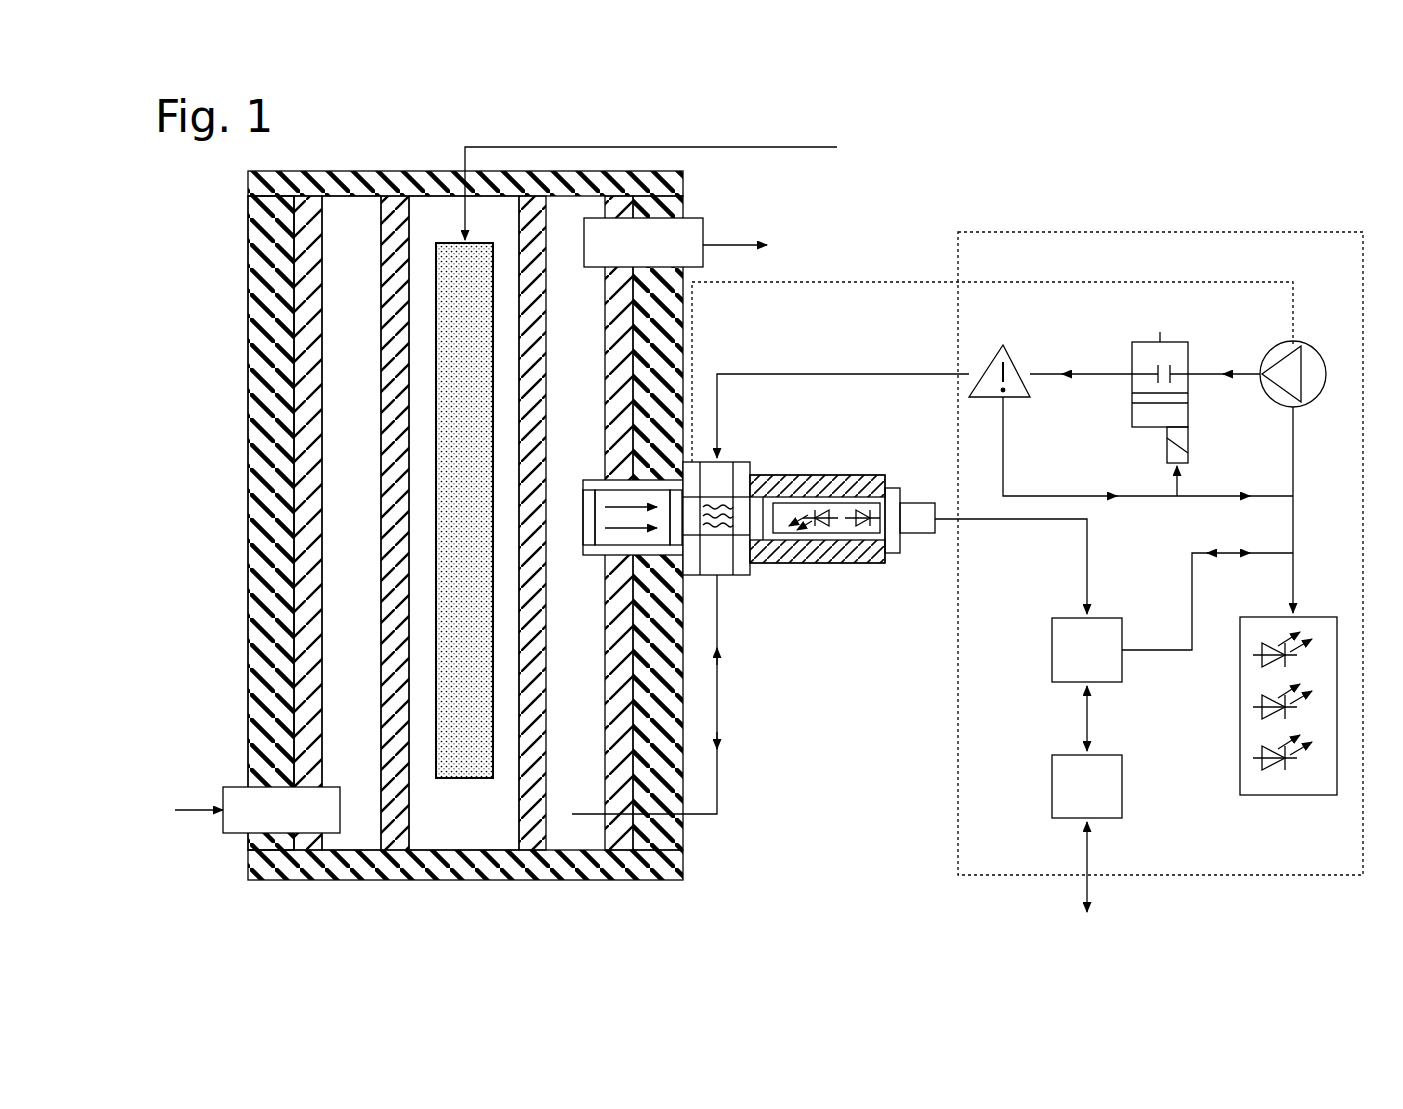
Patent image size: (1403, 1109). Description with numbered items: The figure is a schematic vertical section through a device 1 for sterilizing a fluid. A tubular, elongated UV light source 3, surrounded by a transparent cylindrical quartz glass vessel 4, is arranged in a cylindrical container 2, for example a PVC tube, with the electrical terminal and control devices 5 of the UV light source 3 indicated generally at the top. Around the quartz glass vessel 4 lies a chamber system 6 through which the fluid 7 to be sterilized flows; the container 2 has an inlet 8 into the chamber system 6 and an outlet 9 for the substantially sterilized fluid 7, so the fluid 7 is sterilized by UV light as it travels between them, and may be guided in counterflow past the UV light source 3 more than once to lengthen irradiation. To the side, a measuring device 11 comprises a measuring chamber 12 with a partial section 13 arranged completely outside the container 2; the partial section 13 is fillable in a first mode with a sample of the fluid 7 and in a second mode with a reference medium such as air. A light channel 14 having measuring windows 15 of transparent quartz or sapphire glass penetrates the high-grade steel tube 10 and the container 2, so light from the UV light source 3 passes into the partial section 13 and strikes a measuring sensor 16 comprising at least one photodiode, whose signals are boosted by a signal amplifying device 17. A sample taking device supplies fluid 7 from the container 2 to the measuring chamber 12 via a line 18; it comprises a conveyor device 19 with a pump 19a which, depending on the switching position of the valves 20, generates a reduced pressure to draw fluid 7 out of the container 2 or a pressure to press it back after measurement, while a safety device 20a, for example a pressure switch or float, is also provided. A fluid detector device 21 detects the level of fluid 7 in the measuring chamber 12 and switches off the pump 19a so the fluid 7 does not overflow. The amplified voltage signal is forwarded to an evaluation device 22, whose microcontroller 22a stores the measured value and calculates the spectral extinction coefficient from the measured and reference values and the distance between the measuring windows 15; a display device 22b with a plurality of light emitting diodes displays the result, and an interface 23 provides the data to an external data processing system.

The device 1 is at (218, 255).
The cylindrical container 2 is at (258, 220).
The UV light source 3 is at (445, 408).
The quartz glass vessel 4 is at (388, 442).
The electrical terminal and control devices 5 is at (665, 186).
The chamber system 6 is at (357, 753).
The fluid 7 is at (350, 573).
The inlet 8 is at (235, 790).
The outlet 9 is at (690, 230).
The high-grade steel tube 10 is at (305, 640).
The measuring device 11 is at (845, 586).
The measuring chamber 12 is at (723, 567).
The partial section 13 is at (723, 507).
The light channel 14 is at (627, 533).
The measuring windows 15 is at (672, 497).
The measuring sensor 16 is at (833, 513).
The signal amplifying device 17 is at (877, 513).
The line 18 is at (716, 783).
The conveyor device 19 is at (1321, 348).
The pump 19a is at (1265, 352).
The valves 20 is at (1196, 396).
The safety device 20a is at (1010, 353).
The fluid detector device 21 is at (805, 285).
The evaluation device 22 is at (1053, 708).
The microcontroller 22a is at (1068, 617).
The display device 22b is at (1240, 690).
The interface 23 is at (1087, 799).